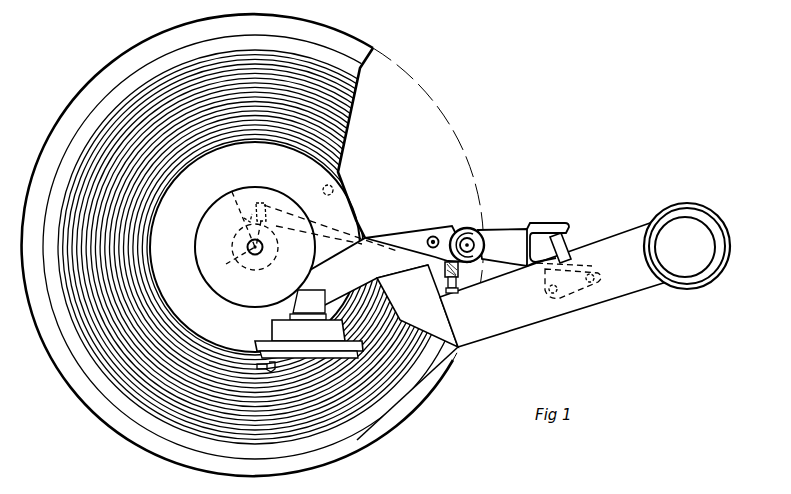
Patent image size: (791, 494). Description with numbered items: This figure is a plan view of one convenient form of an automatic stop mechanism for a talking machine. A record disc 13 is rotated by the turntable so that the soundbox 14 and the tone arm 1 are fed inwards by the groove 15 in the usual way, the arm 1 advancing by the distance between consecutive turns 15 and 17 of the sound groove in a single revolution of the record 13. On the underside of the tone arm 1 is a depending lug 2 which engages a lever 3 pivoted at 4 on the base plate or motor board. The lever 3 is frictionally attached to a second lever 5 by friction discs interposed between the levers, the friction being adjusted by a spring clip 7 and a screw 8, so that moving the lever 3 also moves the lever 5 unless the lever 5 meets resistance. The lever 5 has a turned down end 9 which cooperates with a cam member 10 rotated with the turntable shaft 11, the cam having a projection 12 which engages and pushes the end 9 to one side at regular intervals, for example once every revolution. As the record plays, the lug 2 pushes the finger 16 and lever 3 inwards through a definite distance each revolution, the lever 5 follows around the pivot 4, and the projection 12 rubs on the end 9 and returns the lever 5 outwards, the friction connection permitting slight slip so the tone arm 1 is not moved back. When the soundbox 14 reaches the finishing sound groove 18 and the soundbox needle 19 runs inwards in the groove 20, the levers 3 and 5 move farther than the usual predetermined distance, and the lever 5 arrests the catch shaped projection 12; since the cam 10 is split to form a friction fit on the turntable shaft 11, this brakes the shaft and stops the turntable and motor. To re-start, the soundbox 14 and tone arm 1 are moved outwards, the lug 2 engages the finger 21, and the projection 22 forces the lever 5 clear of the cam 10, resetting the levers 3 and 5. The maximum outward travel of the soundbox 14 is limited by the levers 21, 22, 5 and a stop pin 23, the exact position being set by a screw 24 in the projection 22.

The tone arm 1 is at (525, 323).
The depending lug 2 is at (567, 241).
The lever 3 is at (500, 231).
The pivot 4 is at (474, 226).
The lever 5 is at (377, 224).
The spring clip 7 is at (441, 240).
The screw 8 is at (432, 236).
The turned down end 9 is at (266, 203).
The cam member 10 is at (266, 266).
The turntable shaft 11 is at (238, 260).
The projection 12 is at (234, 211).
The record disc 13 is at (115, 425).
The soundbox 14 is at (283, 332).
The groove 15 is at (357, 438).
The finger 16 is at (547, 221).
The turn of the sound groove 17 is at (215, 453).
The finishing sound groove 18 is at (175, 329).
The soundbox needle 19 is at (256, 366).
The groove 20 is at (171, 213).
The finger 21 is at (540, 255).
The projection 22 is at (417, 306).
The stop pin 23 is at (332, 186).
The screw 24 is at (458, 290).